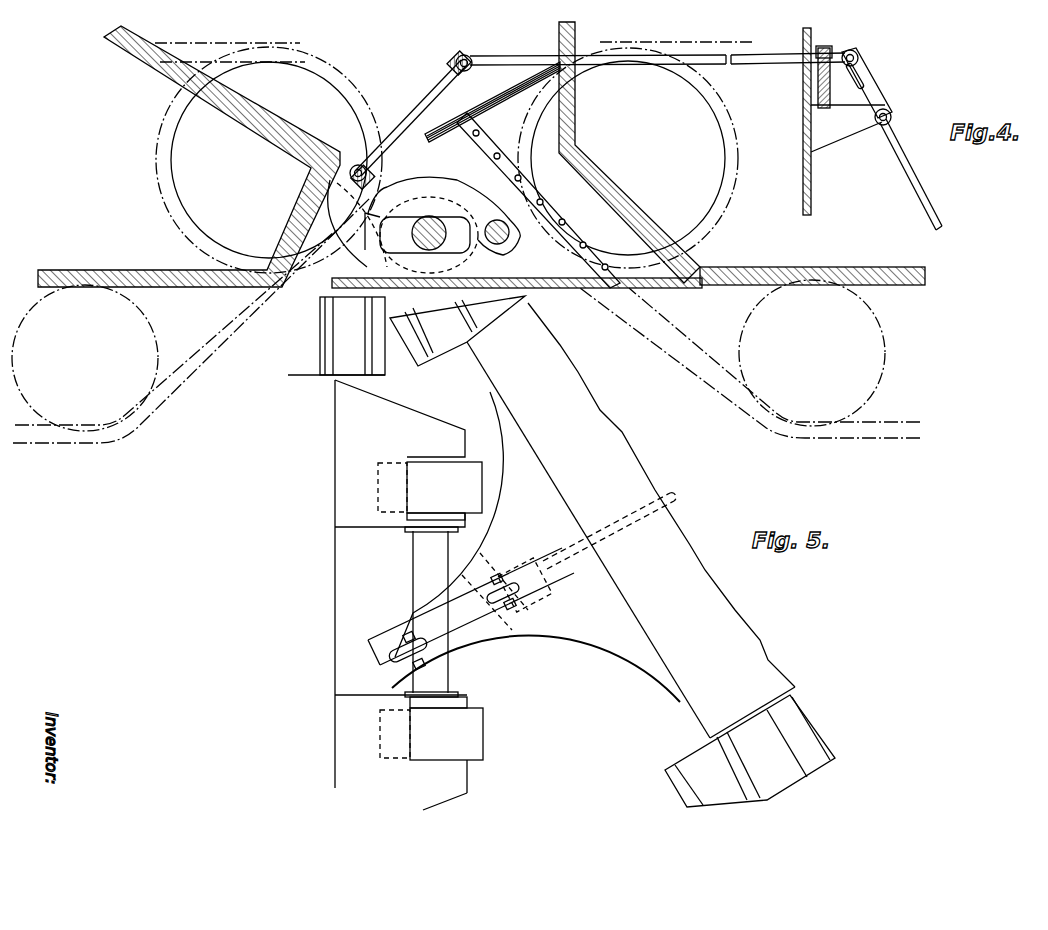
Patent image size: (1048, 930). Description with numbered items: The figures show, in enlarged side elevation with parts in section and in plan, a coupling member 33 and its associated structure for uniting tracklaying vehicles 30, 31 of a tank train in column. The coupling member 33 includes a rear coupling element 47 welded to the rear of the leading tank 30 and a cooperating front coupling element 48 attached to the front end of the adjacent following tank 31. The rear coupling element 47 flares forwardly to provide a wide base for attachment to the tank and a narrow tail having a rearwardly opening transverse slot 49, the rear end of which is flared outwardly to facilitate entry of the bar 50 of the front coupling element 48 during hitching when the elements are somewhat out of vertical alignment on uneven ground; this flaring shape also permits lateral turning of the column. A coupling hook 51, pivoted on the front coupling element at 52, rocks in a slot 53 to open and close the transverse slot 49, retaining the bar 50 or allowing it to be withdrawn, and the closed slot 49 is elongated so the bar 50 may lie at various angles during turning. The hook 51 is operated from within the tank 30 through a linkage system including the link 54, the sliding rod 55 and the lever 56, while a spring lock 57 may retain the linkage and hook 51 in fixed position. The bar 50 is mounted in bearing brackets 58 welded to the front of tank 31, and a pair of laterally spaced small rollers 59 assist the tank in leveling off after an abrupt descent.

In FIG. 4, the tracklaying vehicle 30 is at (893, 442).
In FIG. 5, the tracklaying vehicle 30 is at (809, 648).
In FIG. 4, the tracklaying vehicle 31 is at (78, 442).
In FIG. 5, the tracklaying vehicle 31 is at (335, 778).
In FIG. 4, the coupling member 33 is at (565, 290).
In FIG. 5, the coupling member 33 is at (578, 650).
In FIG. 4, the rear coupling element 47 is at (594, 292).
In FIG. 5, the rear coupling element 47 is at (493, 417).
In FIG. 4, the front coupling element 48 is at (292, 288).
In FIG. 5, the front coupling element 48 is at (412, 565).
In FIG. 4, the transverse slot 49 is at (367, 247).
In FIG. 5, the transverse slot 49 is at (500, 624).
In FIG. 4, the bar 50 is at (412, 231).
In FIG. 5, the bar 50 is at (413, 592).
In FIG. 4, the coupling hook 51 is at (412, 181).
In FIG. 5, the coupling hook 51 is at (398, 675).
In FIG. 4, the pivot 52 is at (506, 238).
In FIG. 5, the slot 53 is at (386, 660).
In FIG. 4, the link 54 is at (433, 94).
In FIG. 5, the link 54 is at (445, 634).
In FIG. 4, the sliding rod 55 is at (517, 64).
In FIG. 5, the sliding rod 55 is at (570, 547).
In FIG. 4, the lever 56 is at (918, 165).
In FIG. 4, the spring lock 57 is at (830, 93).
In FIG. 5, the bearing brackets 58 is at (410, 412).
In FIG. 4, the rollers 59 is at (470, 258).
In FIG. 5, the rollers 59 is at (483, 732).